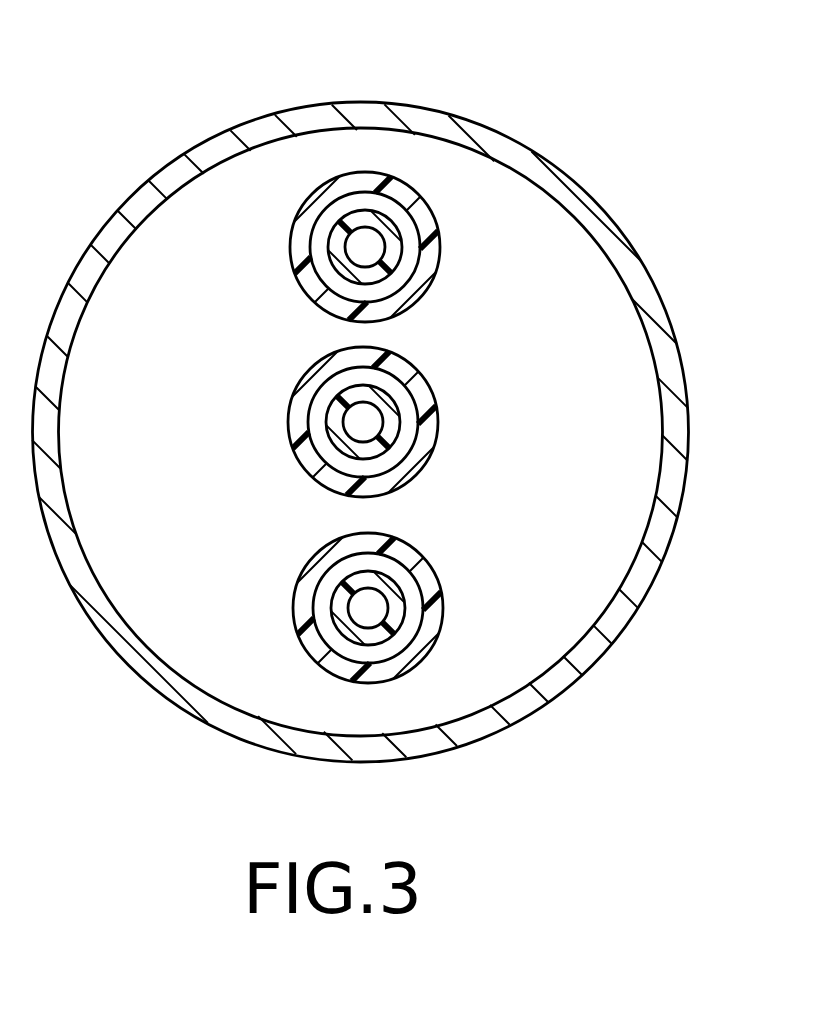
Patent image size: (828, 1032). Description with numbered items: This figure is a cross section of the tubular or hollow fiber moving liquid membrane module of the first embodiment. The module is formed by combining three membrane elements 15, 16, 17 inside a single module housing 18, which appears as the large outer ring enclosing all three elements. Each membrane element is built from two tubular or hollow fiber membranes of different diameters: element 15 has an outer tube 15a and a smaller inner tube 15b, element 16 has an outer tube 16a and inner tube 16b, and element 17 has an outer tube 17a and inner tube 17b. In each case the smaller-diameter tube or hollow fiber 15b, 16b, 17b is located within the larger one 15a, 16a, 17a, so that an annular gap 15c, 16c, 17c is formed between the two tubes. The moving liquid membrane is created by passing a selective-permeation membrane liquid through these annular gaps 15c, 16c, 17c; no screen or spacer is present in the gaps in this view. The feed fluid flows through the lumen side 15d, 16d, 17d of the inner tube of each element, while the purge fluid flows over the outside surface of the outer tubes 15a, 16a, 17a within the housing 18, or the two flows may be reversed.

The membrane element 15 is at (268, 281).
The outer tubular membrane 15a is at (303, 207).
The inner tubular membrane 15b is at (397, 228).
The annular gap 15c is at (347, 203).
The lumen side 15d is at (358, 247).
The membrane element 16 is at (284, 440).
The outer tubular membrane 16a is at (300, 396).
The inner tubular membrane 16b is at (340, 440).
The annular gap 16c is at (407, 409).
The lumen side 16d is at (363, 413).
The membrane element 17 is at (285, 629).
The outer tubular membrane 17a is at (317, 653).
The inner tubular membrane 17b is at (372, 640).
The annular gap 17c is at (413, 625).
The lumen side 17d is at (373, 607).
The module housing 18 is at (652, 561).